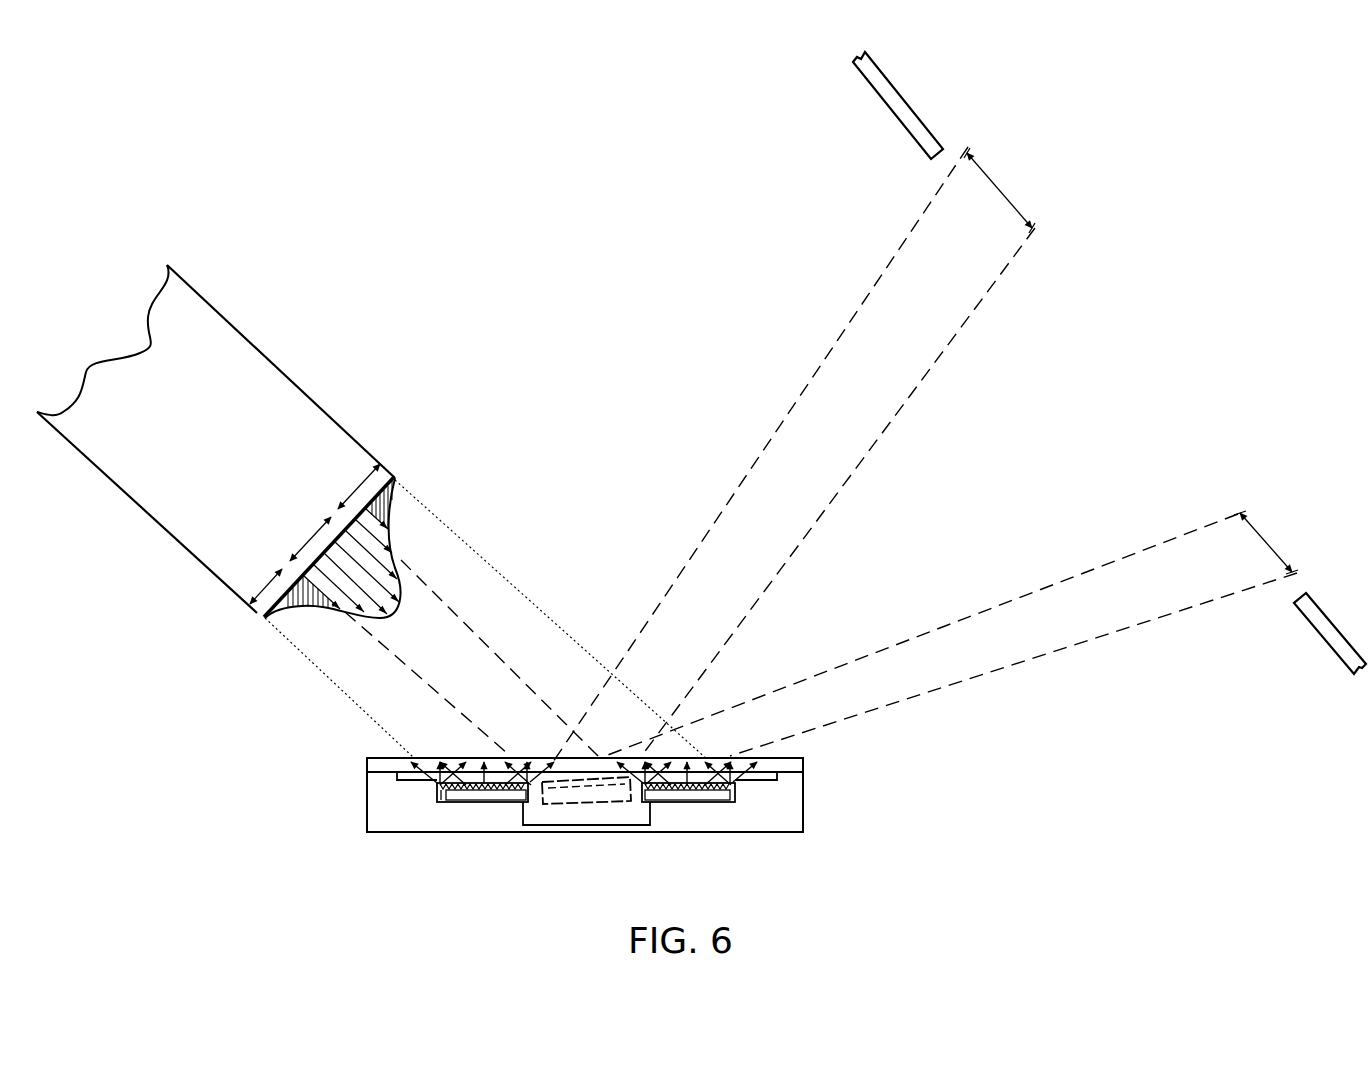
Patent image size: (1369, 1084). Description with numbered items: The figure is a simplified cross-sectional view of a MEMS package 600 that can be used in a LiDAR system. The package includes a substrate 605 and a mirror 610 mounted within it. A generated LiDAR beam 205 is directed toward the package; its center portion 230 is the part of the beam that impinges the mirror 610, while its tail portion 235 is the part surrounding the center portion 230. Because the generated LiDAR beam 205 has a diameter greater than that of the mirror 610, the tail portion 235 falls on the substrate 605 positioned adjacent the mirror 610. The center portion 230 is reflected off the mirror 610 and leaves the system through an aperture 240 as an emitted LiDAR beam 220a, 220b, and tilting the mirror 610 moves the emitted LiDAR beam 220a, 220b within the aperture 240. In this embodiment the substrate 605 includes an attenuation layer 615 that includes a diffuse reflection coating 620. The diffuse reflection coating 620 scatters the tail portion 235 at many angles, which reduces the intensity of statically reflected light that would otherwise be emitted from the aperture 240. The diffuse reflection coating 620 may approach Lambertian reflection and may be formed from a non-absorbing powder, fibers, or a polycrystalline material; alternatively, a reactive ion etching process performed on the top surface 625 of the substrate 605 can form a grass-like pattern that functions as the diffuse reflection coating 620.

The generated LiDAR beam 205 is at (199, 420).
The center portion 230 is at (323, 545).
The tail portion 235 is at (355, 485).
The aperture 240 is at (940, 156).
The emitted LiDAR beam 220a is at (996, 189).
The emitted LiDAR beam 220b is at (1264, 540).
The MEMS package 600 is at (566, 813).
The substrate 605 is at (460, 795).
The mirror 610 is at (578, 790).
The attenuation layer 615 is at (438, 803).
The diffuse reflection coating 620 is at (493, 800).
The top surface 625 is at (510, 789).